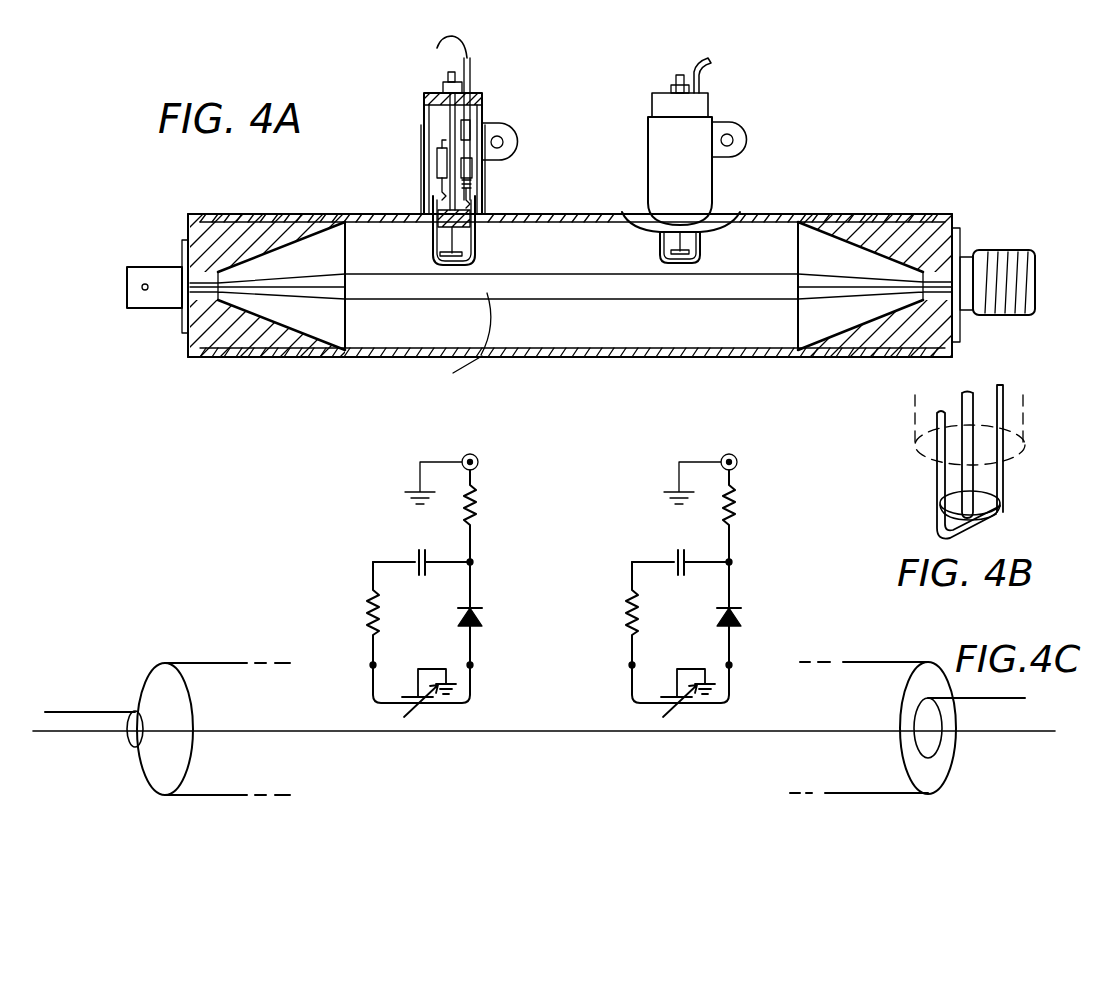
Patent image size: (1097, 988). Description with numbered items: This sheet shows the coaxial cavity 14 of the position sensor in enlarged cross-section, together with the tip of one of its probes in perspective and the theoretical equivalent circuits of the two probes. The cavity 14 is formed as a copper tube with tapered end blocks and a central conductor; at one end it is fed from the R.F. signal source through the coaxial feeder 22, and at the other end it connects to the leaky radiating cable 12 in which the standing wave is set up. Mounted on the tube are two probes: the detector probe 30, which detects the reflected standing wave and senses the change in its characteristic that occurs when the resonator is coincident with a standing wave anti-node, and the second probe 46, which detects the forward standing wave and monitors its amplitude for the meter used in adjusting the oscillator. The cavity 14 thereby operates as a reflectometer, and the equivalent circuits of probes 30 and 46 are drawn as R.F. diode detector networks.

In FIG. 4A, the leaky radiating cable 12 is at (1002, 249).
In FIG. 4A, the coaxial cavity 14 is at (540, 357).
In FIG. 4A, the coaxial feeder 22 is at (153, 266).
In FIG. 4A, the detector probe 30 is at (637, 103).
In FIG. 4C, the detector probe 30 is at (641, 534).
In FIG. 4A, the second probe 46 is at (482, 99).
In FIG. 4C, the second probe 46 is at (491, 588).